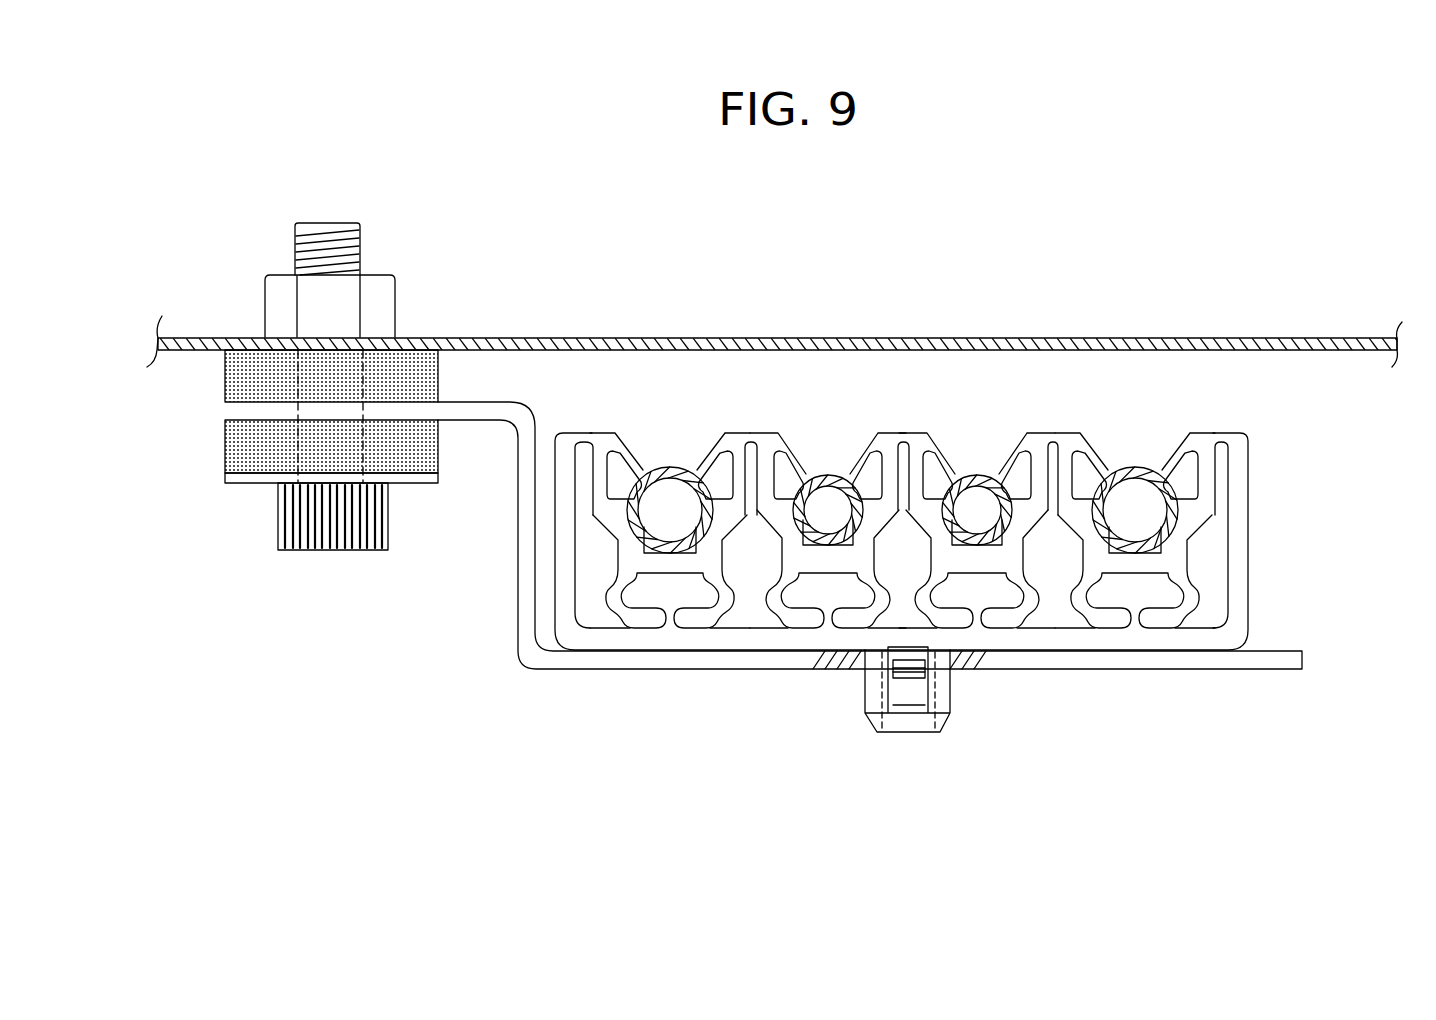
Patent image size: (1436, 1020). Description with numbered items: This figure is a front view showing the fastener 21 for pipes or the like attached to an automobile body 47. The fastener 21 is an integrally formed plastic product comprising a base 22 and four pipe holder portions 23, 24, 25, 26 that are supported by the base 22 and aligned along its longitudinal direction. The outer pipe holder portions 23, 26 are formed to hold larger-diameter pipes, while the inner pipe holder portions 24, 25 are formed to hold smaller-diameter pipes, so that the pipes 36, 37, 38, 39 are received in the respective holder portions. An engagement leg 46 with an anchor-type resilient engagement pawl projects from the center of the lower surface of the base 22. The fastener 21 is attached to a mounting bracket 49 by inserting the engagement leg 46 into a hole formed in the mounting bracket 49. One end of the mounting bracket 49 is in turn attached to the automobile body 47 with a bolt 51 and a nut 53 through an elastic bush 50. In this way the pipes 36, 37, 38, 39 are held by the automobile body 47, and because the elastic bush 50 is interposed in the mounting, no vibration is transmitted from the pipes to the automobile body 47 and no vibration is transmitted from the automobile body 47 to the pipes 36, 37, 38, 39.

The fastener 21 is at (979, 549).
The base 22 is at (1242, 595).
The pipe holder portion 23 is at (688, 452).
The pipe holder portion 24 is at (848, 452).
The pipe holder portion 25 is at (998, 452).
The pipe holder portion 26 is at (1160, 452).
The pipe 36 is at (667, 469).
The pipe 37 is at (823, 472).
The pipe 38 is at (975, 470).
The pipe 39 is at (1130, 470).
The engagement leg 46 is at (943, 707).
The automobile body 47 is at (735, 338).
The mounting bracket 49 is at (518, 598).
The elastic bush 50 is at (248, 436).
The bolt 51 is at (293, 521).
The nut 53 is at (280, 297).